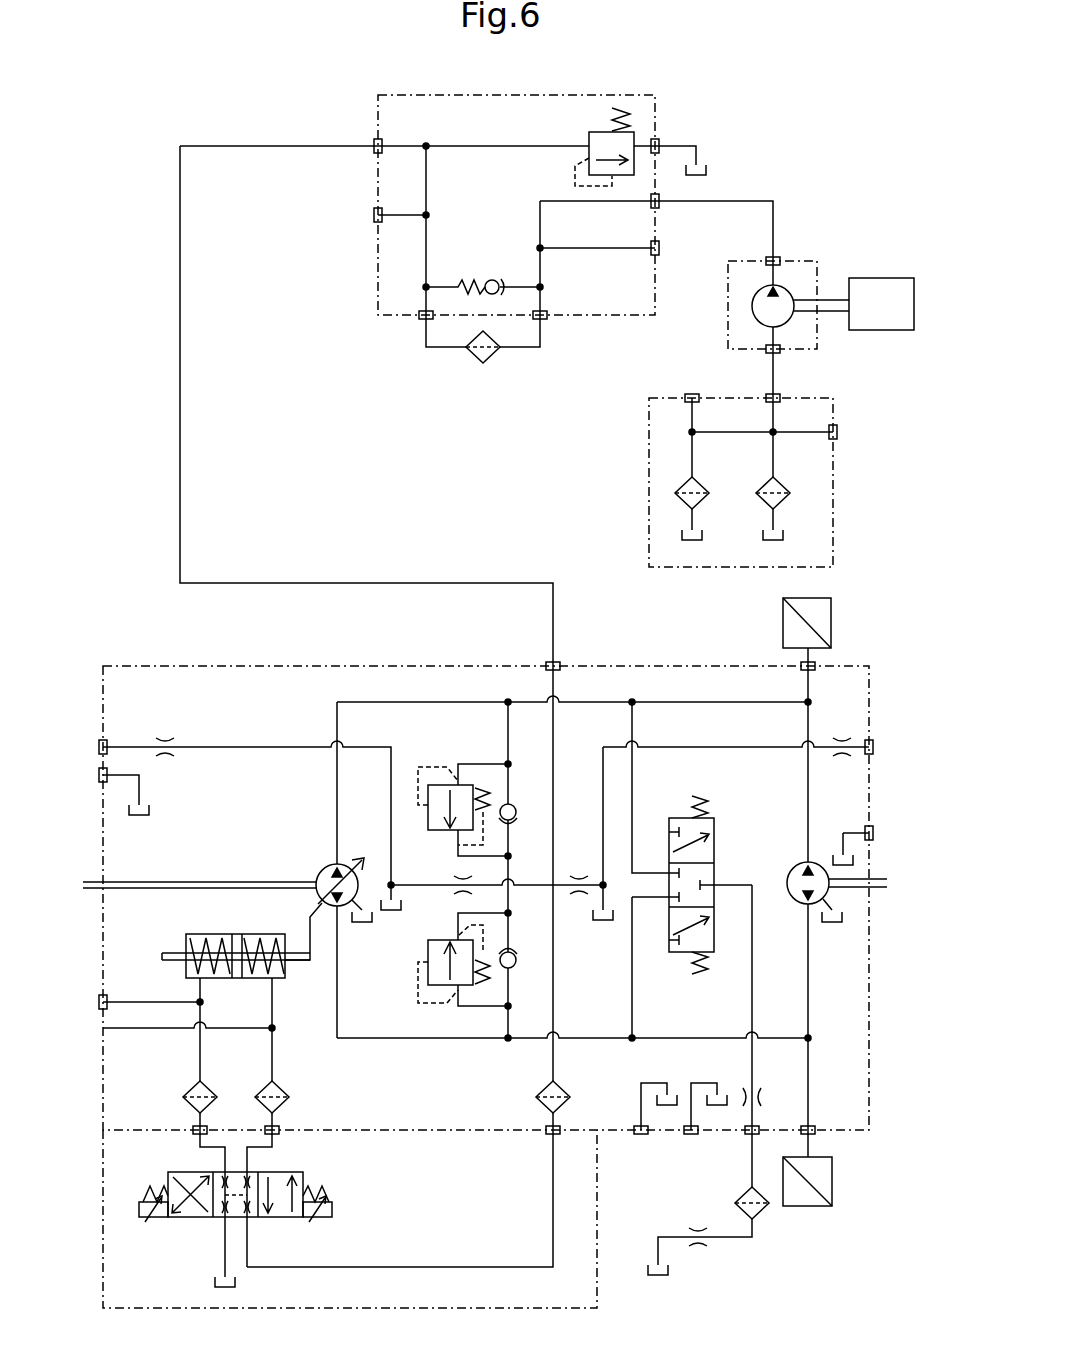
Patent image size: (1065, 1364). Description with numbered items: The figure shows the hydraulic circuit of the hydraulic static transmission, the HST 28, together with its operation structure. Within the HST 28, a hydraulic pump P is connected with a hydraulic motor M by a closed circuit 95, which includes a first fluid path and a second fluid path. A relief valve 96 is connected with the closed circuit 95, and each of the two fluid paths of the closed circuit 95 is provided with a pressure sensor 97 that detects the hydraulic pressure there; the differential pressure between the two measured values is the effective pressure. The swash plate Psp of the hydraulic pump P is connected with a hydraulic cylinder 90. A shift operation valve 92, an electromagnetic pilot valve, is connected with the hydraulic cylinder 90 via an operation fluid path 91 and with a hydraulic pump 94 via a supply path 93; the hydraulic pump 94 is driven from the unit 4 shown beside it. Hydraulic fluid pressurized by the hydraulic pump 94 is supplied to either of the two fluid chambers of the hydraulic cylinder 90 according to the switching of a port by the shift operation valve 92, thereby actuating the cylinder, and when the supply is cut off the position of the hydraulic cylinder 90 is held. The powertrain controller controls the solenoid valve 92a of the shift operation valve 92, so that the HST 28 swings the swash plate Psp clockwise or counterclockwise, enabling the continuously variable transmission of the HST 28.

The engine 4 is at (880, 331).
The HST 28 is at (160, 665).
The hydraulic cylinder 90 is at (207, 932).
The operation fluid path 91 is at (198, 1061).
The shift operation valve 92 is at (285, 1172).
The solenoid valve 92a is at (139, 1208).
The supply path 93 is at (365, 582).
The hydraulic pump 94 is at (782, 290).
The closed circuit 95 is at (702, 700).
The relief valve 96 is at (716, 848).
The pressure sensor 97 is at (831, 622).
The hydraulic pump P is at (316, 866).
The swash plate Psp is at (360, 860).
The hydraulic motor M is at (798, 868).